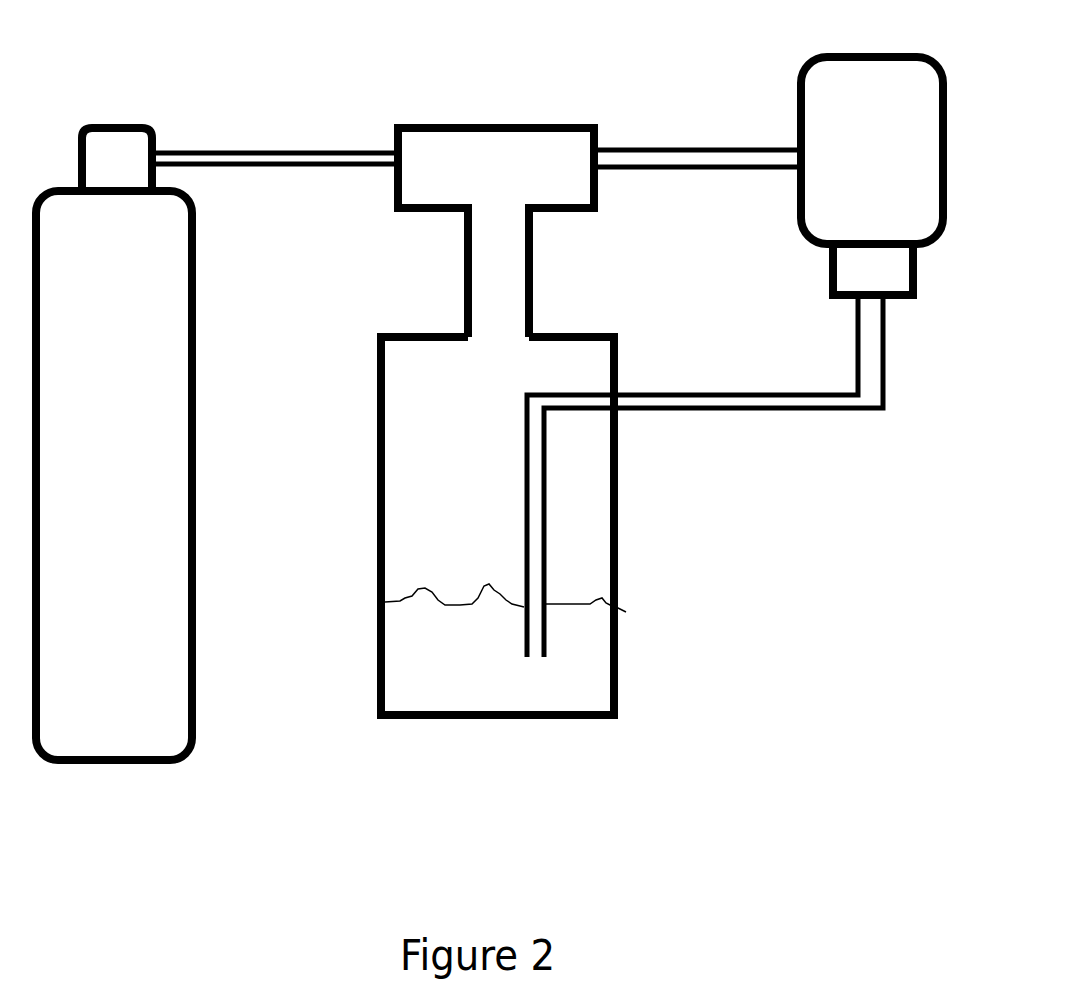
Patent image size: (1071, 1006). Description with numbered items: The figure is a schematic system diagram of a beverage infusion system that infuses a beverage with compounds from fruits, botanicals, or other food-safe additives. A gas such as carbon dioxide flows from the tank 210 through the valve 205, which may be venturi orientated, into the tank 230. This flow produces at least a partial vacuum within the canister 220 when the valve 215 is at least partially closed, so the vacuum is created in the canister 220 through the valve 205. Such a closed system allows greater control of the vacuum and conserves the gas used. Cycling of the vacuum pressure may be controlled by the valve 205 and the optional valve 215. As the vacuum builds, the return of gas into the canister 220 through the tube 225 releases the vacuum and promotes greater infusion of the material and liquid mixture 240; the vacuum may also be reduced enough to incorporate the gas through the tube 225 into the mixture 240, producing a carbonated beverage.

The valve 205 is at (504, 160).
The tank 210 is at (138, 491).
The valve 215 is at (873, 272).
The canister 220 is at (618, 523).
The tube 225 is at (745, 410).
The tank 230 is at (900, 166).
The material and liquid mixture 240 is at (480, 686).